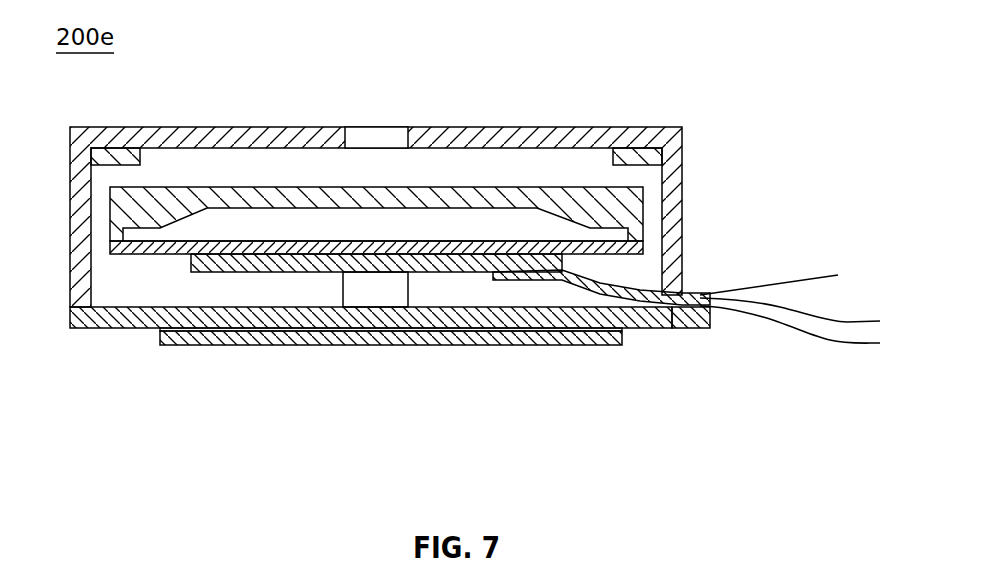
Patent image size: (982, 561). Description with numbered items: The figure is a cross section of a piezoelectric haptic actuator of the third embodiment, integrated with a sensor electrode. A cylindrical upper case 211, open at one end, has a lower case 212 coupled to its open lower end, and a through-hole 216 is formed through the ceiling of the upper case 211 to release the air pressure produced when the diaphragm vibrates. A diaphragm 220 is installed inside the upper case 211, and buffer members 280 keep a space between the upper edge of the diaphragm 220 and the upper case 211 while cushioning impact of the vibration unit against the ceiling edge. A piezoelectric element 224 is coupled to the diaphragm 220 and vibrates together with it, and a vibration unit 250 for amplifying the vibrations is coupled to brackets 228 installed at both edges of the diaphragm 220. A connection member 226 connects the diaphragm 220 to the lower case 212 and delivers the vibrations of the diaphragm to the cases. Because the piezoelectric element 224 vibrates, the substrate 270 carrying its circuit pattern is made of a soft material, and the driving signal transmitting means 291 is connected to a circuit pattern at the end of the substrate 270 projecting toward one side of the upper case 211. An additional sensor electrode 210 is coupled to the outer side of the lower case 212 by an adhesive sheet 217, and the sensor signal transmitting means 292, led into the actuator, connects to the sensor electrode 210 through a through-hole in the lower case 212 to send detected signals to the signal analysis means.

The upper case 211 is at (682, 172).
The through-hole 216 is at (372, 140).
The buffer member 280 is at (641, 160).
The lower case 212 is at (143, 323).
The substrate 270 is at (672, 328).
The vibration unit 250 is at (224, 197).
The diaphragm 220 is at (117, 258).
The piezoelectric element 224 is at (236, 272).
The connection member 226 is at (362, 298).
The bracket 228 is at (641, 218).
The adhesive sheet 217 is at (492, 331).
The sensor electrode 210 is at (440, 345).
The sensor signal transmitting means 292 is at (810, 277).
The driving signal transmitting means 291 is at (833, 320).